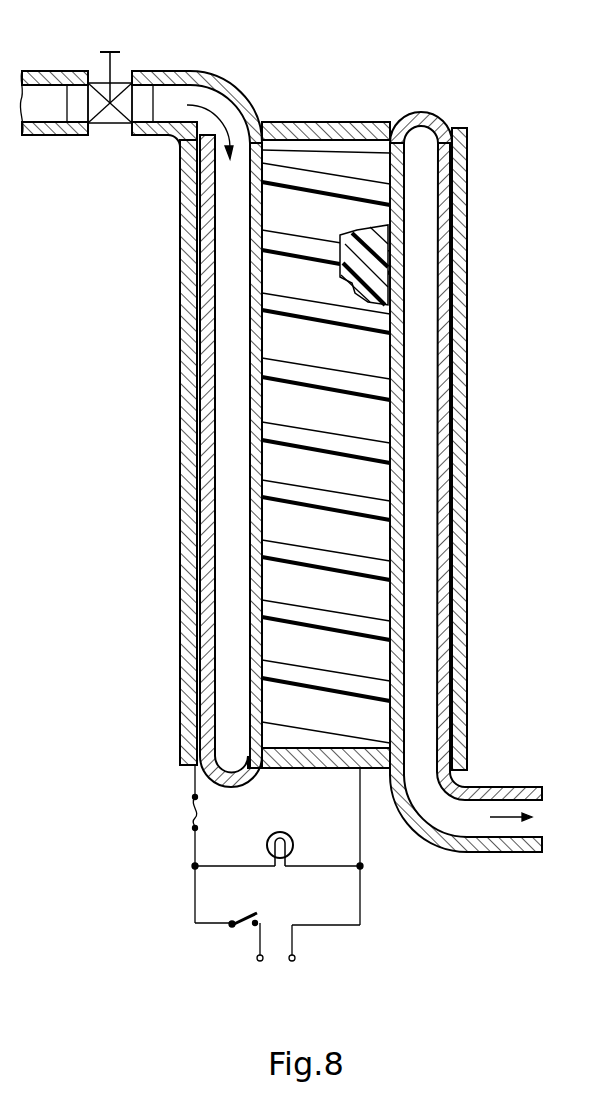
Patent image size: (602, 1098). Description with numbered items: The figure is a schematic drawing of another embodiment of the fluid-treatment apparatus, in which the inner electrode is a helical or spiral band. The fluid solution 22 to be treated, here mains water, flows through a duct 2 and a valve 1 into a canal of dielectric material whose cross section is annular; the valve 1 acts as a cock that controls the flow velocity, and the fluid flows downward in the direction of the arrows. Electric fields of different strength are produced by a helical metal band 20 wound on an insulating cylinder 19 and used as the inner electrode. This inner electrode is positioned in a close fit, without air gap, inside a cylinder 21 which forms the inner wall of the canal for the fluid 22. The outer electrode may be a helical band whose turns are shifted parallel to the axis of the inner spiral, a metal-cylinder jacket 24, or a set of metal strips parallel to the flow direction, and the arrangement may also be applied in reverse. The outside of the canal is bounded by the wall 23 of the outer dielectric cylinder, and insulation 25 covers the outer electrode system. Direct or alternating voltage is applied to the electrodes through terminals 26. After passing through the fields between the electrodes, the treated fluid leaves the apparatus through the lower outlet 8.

The valve 1 is at (120, 52).
The duct 2 is at (47, 72).
The lower outlet 8 is at (487, 804).
The insulating cylinder 19 is at (372, 358).
The helical metal band 20 is at (377, 322).
The cylinder 21 is at (250, 487).
The fluid solution 22 is at (233, 242).
The wall of the outer dielectric cylinder 23 is at (324, 449).
The metal-cylinder jacket 24 is at (197, 372).
The insulation 25 is at (180, 427).
The terminals 26 is at (243, 930).